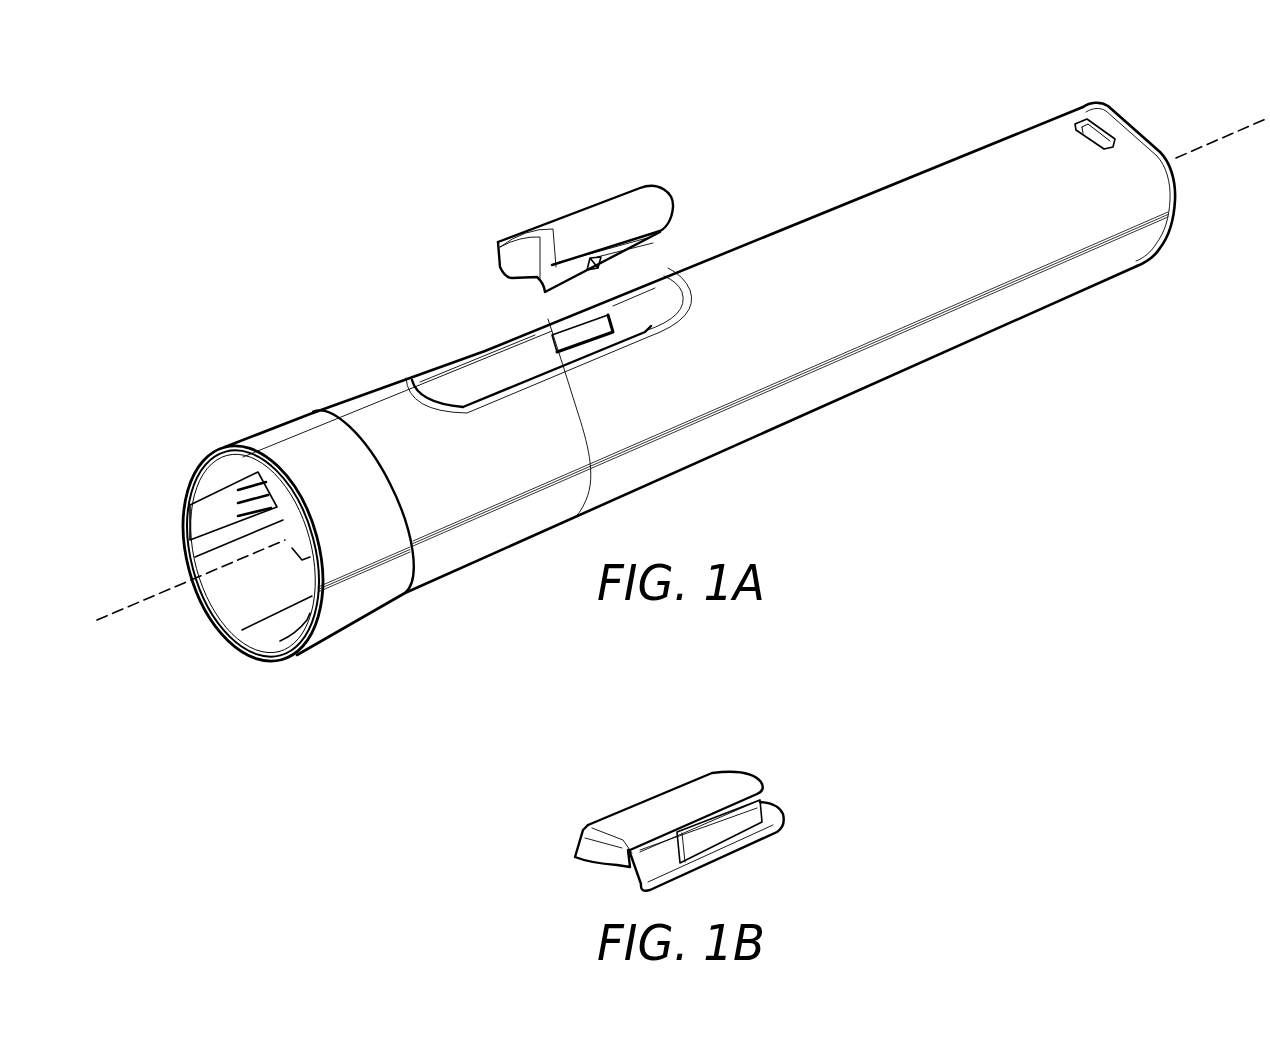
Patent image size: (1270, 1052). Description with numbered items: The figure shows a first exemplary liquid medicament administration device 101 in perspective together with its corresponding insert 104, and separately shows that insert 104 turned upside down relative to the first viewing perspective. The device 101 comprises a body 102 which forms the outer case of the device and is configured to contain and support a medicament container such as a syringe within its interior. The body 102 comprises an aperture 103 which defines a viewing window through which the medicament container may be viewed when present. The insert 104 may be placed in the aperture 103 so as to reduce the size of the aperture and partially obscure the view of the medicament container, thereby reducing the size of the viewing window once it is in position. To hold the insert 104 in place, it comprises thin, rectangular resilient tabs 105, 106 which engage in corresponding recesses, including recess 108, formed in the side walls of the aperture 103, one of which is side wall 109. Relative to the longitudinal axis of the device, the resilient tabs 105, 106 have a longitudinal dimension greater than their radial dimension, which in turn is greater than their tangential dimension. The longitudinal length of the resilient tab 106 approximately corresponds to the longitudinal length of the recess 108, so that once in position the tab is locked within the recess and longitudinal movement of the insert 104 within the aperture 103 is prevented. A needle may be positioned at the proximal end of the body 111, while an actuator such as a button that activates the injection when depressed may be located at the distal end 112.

In FIG. 1A, the liquid medicament administration device 101 is at (955, 355).
In FIG. 1A, the body 102 is at (880, 208).
In FIG. 1A, the aperture 103 is at (582, 358).
In FIG. 1A, the insert 104 is at (478, 236).
In FIG. 1B, the insert 104 is at (782, 788).
In FIG. 1A, the resilient tab 105 is at (642, 258).
In FIG. 1B, the resilient tab 106 is at (727, 835).
In FIG. 1A, the recess 108 is at (585, 318).
In FIG. 1A, the side wall 109 is at (525, 350).
In FIG. 1A, the proximal end of the body 111 is at (174, 498).
In FIG. 1A, the distal end 112 is at (1108, 96).